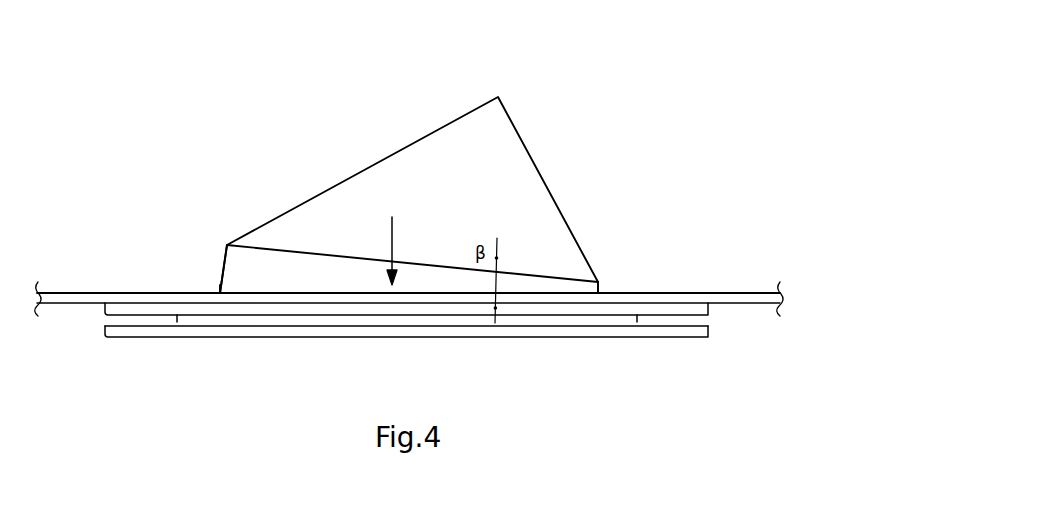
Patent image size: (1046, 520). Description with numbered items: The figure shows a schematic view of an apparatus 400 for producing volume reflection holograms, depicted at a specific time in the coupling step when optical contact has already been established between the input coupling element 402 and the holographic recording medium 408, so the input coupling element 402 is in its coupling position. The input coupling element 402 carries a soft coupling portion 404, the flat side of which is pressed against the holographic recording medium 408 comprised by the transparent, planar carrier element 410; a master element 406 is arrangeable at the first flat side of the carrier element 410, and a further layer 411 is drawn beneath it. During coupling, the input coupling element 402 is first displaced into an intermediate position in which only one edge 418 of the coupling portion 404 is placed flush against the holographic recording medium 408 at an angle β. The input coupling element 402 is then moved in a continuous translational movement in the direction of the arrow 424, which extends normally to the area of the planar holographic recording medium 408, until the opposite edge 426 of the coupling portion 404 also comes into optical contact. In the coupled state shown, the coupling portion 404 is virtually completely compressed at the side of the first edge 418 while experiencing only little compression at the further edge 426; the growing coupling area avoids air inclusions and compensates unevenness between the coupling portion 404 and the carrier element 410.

The apparatus 400 is at (640, 95).
The input coupling element 402 is at (416, 157).
The coupling portion 404 is at (243, 268).
The master element 406 is at (616, 325).
The holographic recording medium 408 is at (623, 298).
The carrier element 410 is at (685, 312).
The carrier plate 411 is at (685, 330).
The first edge 418 is at (600, 293).
The arrow 424 is at (395, 232).
The further edge 426 is at (220, 295).